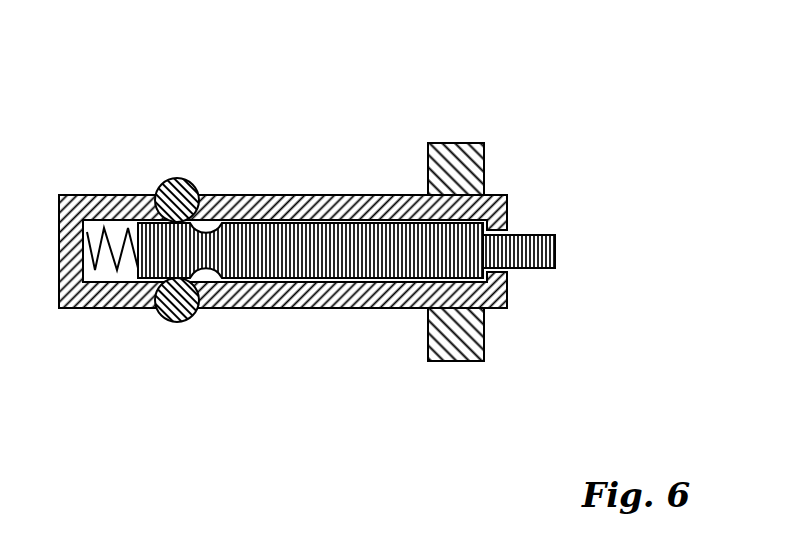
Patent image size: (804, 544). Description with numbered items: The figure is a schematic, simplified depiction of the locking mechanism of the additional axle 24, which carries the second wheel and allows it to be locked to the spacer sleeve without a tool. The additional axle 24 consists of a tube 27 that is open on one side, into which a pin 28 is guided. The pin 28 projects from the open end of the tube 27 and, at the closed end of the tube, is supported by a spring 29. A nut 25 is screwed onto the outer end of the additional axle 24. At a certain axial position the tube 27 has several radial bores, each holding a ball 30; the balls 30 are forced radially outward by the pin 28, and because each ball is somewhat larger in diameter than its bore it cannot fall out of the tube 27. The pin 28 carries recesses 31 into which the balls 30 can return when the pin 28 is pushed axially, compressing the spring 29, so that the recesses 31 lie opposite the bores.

The additional axle 24 is at (351, 255).
The nut 25 is at (458, 345).
The tube 27 is at (345, 300).
The pin 28 is at (555, 252).
The spring 29 is at (100, 267).
The ball 30 is at (178, 303).
The recesses 31 is at (203, 277).